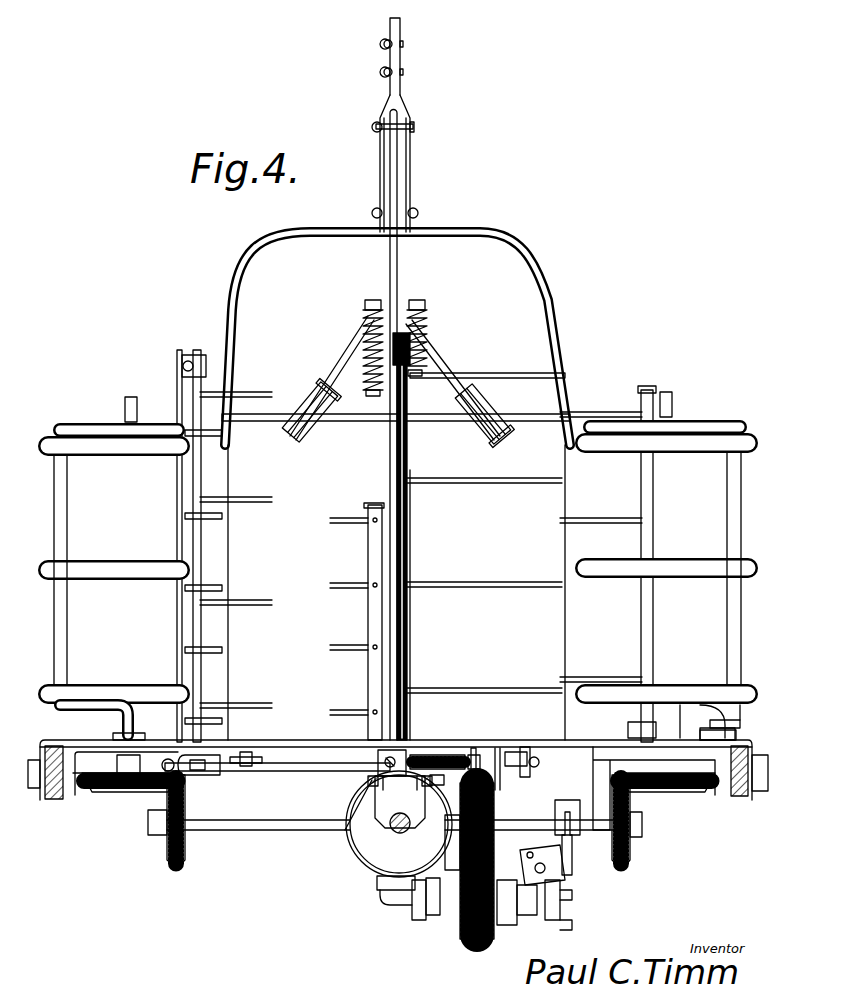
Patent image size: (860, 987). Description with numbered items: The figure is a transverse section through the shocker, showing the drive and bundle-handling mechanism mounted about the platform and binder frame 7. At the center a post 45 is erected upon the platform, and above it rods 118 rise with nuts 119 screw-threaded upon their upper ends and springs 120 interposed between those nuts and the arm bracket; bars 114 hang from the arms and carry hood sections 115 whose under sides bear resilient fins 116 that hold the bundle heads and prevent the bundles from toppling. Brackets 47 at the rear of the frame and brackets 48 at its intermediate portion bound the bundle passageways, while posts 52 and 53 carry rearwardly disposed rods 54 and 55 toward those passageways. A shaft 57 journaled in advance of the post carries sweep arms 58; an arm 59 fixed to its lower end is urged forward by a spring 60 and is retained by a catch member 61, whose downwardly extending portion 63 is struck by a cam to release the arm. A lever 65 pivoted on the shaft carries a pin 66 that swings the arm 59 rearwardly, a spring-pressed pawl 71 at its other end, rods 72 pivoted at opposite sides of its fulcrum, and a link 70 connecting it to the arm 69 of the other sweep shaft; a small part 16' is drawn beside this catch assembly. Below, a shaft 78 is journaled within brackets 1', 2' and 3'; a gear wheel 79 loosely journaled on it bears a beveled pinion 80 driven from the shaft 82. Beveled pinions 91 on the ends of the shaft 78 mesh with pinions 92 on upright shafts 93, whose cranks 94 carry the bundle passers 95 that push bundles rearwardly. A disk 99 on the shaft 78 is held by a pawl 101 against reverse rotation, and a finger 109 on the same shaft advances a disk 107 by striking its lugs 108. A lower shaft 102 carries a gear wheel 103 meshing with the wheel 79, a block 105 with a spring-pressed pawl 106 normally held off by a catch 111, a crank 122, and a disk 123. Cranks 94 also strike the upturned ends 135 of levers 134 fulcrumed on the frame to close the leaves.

The bar 114 is at (383, 193).
The rod 118 is at (389, 468).
The nut 119 is at (370, 312).
The spring 120 is at (368, 355).
The hood section 115 is at (355, 346).
The resilient fin 116 is at (308, 433).
The bracket 47 is at (272, 413).
The post 52 is at (207, 546).
The rod 55 is at (265, 596).
The post 53 is at (226, 651).
The rod 54 is at (582, 522).
The bundle passer 95 is at (135, 557).
The crank 94 is at (70, 655).
The shaft 93 is at (130, 736).
The post 45 is at (370, 624).
The sweep arm 58 is at (492, 699).
The shaft 57 is at (411, 654).
The bracket 48 is at (512, 652).
The bracket 1' is at (398, 785).
The downwardly extending portion 63 is at (540, 762).
The frame of the binder 7 is at (58, 800).
The bracket 3' is at (717, 813).
The upturned end 135 is at (728, 722).
The lever 134 is at (732, 742).
The beveled pinion 92 is at (108, 795).
The beveled pinion 91 is at (165, 851).
The shaft 78 is at (256, 835).
The lever 65 is at (306, 774).
The arm 69 is at (238, 776).
The link 70 is at (258, 767).
The spring 60 is at (401, 760).
The arm 59 is at (432, 756).
The bracket 2' is at (453, 753).
The spring-pressed pawl 71 is at (497, 750).
The catch member 61 is at (480, 756).
The block 16' is at (539, 738).
The shaft 82 is at (400, 834).
The pin 66 is at (445, 783).
The rod 72 is at (345, 832).
The gear wheel 103 is at (490, 930).
The shaft 102 is at (455, 900).
The pawl 101 is at (612, 790).
The crank 122 is at (378, 884).
The disk 123 is at (395, 900).
The gear wheel 79 is at (418, 905).
The beveled pinion 80 is at (435, 900).
The disk 99 is at (570, 845).
The finger 109 is at (598, 873).
The spring-pressed catch 111 is at (562, 885).
The block 105 is at (528, 905).
The spring-pressed pawl 106 is at (537, 918).
The disk 107 is at (570, 915).
The lug 108 is at (575, 930).